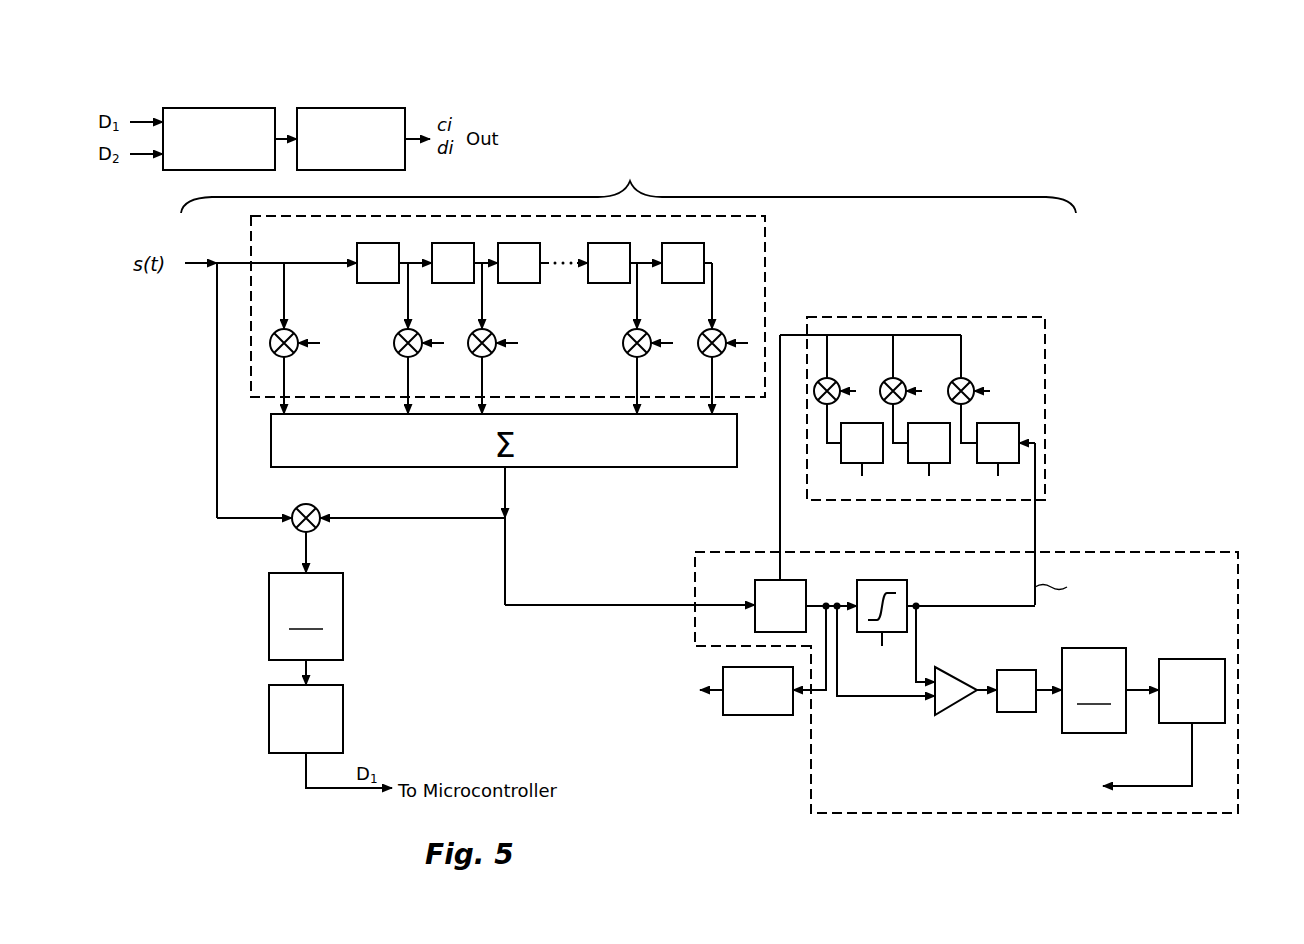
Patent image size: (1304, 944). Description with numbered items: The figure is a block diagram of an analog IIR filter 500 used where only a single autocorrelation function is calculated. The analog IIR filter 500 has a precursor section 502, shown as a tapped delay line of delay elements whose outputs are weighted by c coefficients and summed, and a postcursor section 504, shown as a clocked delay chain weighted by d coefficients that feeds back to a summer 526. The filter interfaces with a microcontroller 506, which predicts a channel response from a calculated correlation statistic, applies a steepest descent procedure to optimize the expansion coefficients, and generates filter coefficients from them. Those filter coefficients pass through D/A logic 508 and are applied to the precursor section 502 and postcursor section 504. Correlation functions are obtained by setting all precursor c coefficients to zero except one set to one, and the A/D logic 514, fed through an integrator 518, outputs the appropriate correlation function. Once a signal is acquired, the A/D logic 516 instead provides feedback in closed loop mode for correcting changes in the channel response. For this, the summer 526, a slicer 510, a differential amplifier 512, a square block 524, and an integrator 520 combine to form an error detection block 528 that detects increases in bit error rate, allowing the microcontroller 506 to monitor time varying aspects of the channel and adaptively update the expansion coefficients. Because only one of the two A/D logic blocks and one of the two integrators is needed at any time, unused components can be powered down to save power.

The analog IIR filter 500 is at (628, 184).
The precursor section 502 is at (766, 270).
The postcursor section 504 is at (978, 316).
The microcontroller 506 is at (215, 108).
The D/A logic 508 is at (349, 108).
The slicer 510 is at (907, 588).
The differential amplifier 512 is at (953, 707).
The A/D logic 514 is at (343, 748).
The A/D logic 516 is at (1195, 659).
The integrator 518 is at (343, 634).
The integrator 520 is at (1110, 648).
The square block 524 is at (1005, 712).
The summer 526 is at (760, 595).
The error detection block 528 is at (1238, 759).